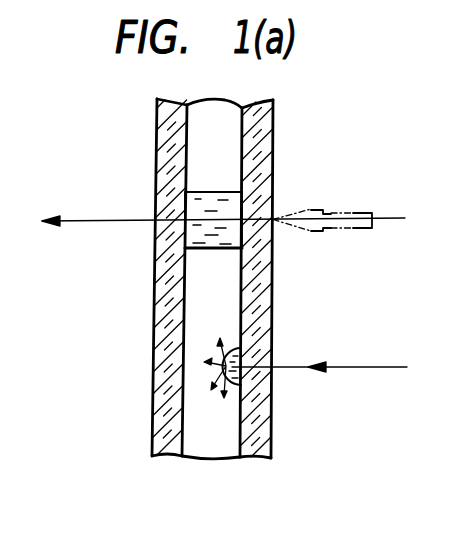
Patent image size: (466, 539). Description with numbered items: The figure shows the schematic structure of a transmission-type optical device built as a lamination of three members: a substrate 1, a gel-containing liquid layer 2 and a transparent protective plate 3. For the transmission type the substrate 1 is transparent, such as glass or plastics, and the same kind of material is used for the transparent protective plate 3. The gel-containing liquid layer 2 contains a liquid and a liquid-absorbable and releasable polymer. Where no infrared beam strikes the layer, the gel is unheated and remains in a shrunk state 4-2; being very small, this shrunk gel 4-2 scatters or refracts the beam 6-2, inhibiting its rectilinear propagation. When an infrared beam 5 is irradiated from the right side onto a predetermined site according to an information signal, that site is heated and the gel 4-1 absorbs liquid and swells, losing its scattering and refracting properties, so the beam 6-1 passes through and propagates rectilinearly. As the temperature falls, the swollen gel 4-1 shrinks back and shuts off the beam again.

The substrate 1 is at (258, 443).
The gel-containing liquid layer 2 is at (215, 443).
The transparent protective plate 3 is at (163, 444).
The swollen gel 4-1 is at (203, 192).
The shrunk gel 4-2 is at (236, 383).
The infrared beam 5 is at (313, 211).
The beam passing through swollen gel 6-1 is at (92, 221).
The beam scattered by shrunk gel 6-2 is at (373, 366).